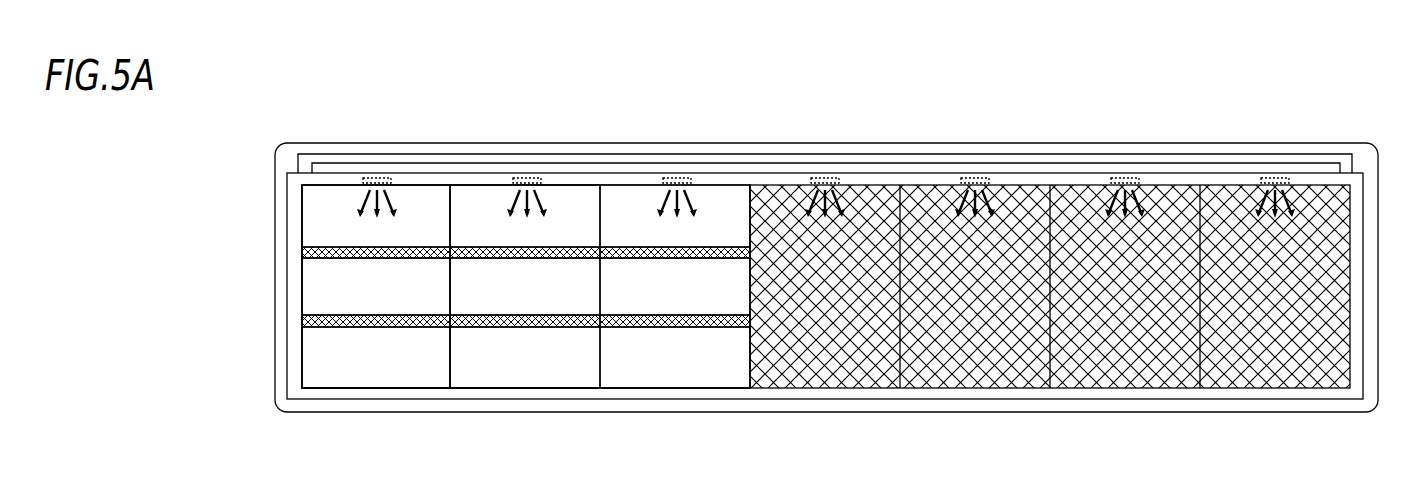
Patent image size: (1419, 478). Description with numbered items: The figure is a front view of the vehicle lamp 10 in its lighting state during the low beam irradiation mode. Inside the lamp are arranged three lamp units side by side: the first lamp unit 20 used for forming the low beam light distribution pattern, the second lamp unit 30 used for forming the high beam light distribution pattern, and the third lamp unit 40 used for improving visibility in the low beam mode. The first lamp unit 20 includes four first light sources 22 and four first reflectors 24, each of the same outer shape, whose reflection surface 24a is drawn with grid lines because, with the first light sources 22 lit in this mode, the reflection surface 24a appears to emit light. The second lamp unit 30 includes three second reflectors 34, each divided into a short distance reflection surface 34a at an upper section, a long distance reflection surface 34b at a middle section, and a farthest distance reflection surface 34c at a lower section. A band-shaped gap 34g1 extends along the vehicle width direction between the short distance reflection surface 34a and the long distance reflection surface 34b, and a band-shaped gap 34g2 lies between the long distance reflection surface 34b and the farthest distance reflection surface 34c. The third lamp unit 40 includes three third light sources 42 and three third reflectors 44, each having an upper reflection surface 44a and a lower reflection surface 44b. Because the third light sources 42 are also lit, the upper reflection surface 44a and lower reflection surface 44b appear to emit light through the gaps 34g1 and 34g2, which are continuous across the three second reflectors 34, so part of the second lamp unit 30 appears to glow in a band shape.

The vehicle lamp 10 is at (345, 122).
The first lamp unit 20 is at (1077, 160).
The first light source 22 is at (835, 172).
The first reflector 24 is at (862, 390).
The reflection surface 24a is at (975, 368).
The second lamp unit 30 is at (618, 160).
The second reflector 34 is at (413, 390).
The short distance reflection surface 34a is at (337, 221).
The long distance reflection surface 34b is at (335, 288).
The farthest distance reflection surface 34c is at (335, 357).
The band-shaped gap 34g1 is at (300, 252).
The band-shaped gap 34g2 is at (300, 320).
The third lamp unit 40 is at (489, 158).
The third light source 42 is at (384, 172).
The third reflector 44 is at (381, 388).
The upper reflection surface 44a is at (377, 258).
The lower reflection surface 44b is at (520, 328).